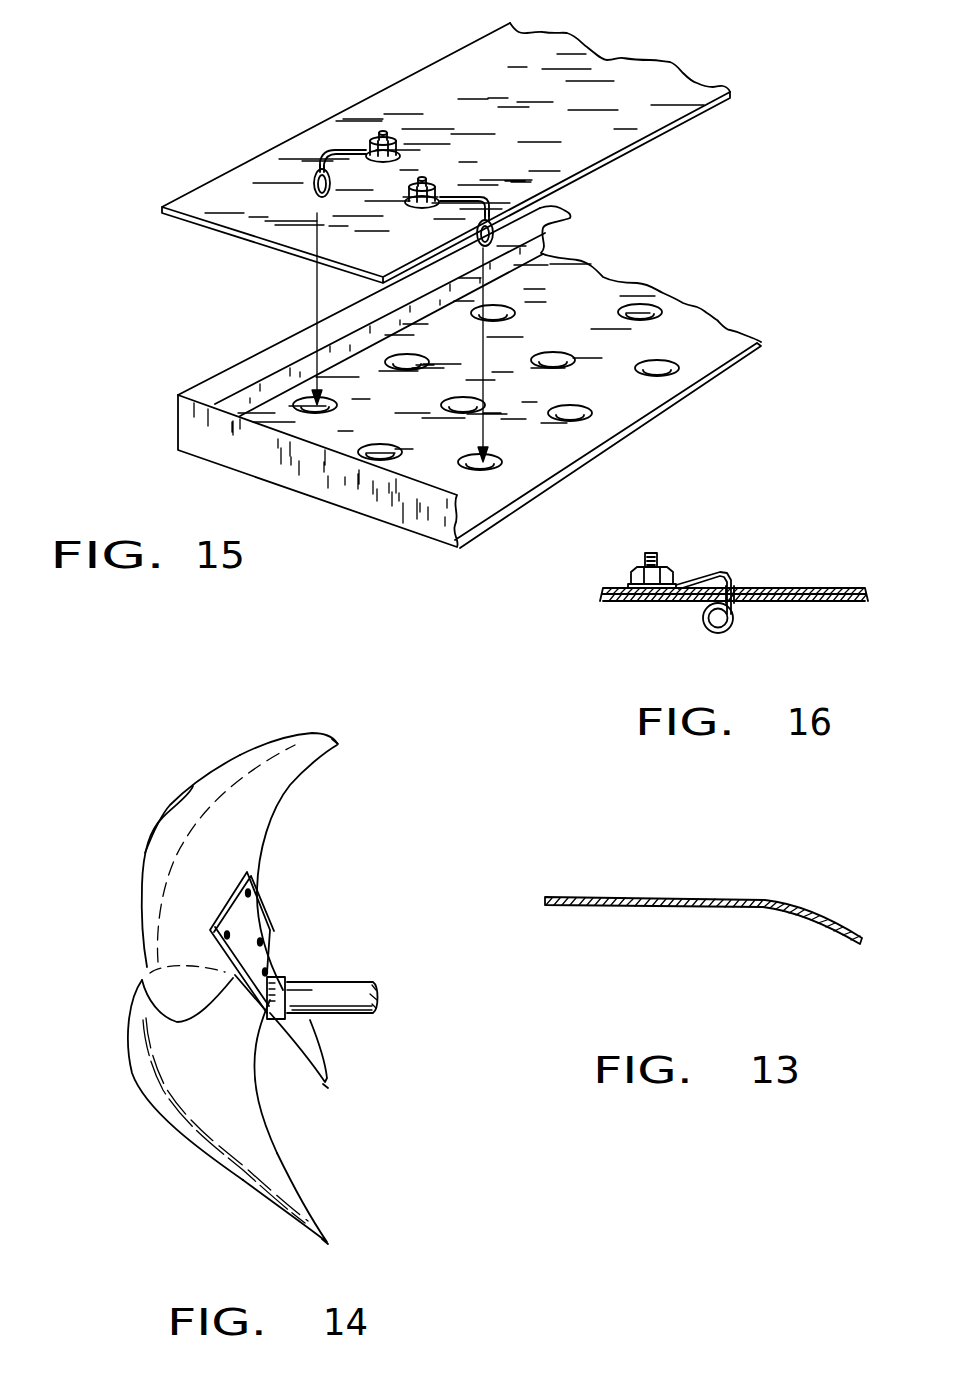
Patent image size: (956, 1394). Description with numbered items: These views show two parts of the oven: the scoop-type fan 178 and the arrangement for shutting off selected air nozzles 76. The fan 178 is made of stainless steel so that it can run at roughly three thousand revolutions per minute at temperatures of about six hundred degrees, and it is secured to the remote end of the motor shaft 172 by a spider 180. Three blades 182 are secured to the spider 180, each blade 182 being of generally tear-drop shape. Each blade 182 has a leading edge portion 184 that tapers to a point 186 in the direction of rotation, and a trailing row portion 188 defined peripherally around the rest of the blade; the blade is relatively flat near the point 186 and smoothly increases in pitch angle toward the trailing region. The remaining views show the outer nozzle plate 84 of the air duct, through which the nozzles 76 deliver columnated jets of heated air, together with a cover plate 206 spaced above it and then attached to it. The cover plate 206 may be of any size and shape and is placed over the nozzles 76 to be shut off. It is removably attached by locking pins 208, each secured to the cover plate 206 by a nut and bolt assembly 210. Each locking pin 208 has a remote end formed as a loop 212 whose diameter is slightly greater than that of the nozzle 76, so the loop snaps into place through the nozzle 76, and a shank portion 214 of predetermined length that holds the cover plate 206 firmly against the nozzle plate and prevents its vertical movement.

In FIG. 15, the nozzles 76 is at (590, 408).
In FIG. 16, the nozzles 76 is at (742, 603).
In FIG. 15, the outer nozzle plate 84 is at (697, 325).
In FIG. 16, the outer nozzle plate 84 is at (645, 603).
In FIG. 14, the shaft 172 is at (345, 988).
In FIG. 14, the scoop-type fan 178 is at (271, 977).
In FIG. 14, the spider 180 is at (245, 920).
In FIG. 14, the blades 182 is at (193, 786).
In FIG. 14, the blade edge 184 is at (295, 748).
In FIG. 14, the point 186 is at (338, 744).
In FIG. 14, the trailing row portion 188 is at (147, 947).
In FIG. 15, the cover plate 206 is at (622, 88).
In FIG. 16, the cover plate 206 is at (780, 587).
In FIG. 15, the locking pins 208 is at (343, 135).
In FIG. 16, the locking pins 208 is at (697, 567).
In FIG. 15, the nut and bolt assemblies 210 is at (400, 139).
In FIG. 16, the nut and bolt assemblies 210 is at (641, 553).
In FIG. 15, the clip ring 212 is at (313, 190).
In FIG. 16, the clip ring 212 is at (712, 630).
In FIG. 15, the shank portion 214 is at (314, 170).
In FIG. 16, the shank portion 214 is at (737, 627).